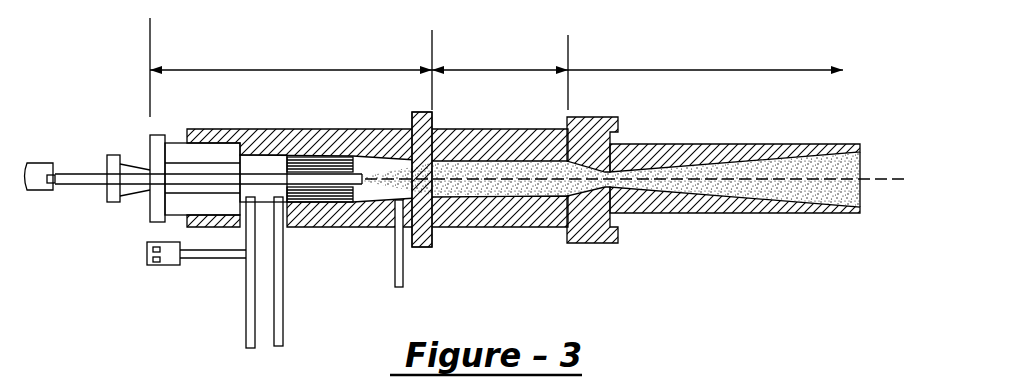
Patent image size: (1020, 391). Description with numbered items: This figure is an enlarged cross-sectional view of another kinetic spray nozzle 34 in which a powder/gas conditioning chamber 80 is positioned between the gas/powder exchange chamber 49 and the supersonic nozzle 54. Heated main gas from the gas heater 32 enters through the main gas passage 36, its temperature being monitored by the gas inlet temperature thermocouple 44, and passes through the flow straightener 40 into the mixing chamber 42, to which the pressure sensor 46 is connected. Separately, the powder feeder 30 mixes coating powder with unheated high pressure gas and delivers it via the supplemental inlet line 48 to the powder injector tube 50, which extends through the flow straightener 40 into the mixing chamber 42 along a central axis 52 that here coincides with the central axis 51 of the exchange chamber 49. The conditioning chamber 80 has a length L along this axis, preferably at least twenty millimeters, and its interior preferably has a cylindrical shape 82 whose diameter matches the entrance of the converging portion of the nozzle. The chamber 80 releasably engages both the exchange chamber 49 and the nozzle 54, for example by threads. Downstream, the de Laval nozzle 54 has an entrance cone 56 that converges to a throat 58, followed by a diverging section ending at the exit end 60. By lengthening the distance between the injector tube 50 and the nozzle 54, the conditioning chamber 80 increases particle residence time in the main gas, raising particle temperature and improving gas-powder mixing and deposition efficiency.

The high pressure powder feeder 30 is at (318, 5).
The gas heater 32 is at (258, 160).
The kinetic spray nozzle 34 is at (638, 40).
The main gas passage 36 is at (258, 318).
The flow straightener 40 is at (314, 202).
The mixing chamber 42 is at (357, 158).
The gas inlet temperature thermocouple 44 is at (160, 265).
The pressure sensor 46 is at (403, 264).
The supplemental inlet line 48 is at (38, 163).
The gas/powder exchange chamber 49 is at (253, 70).
The powder injector tube 50 is at (78, 186).
The central axis of the gas/powder exchange chamber 51 is at (657, 161).
The central axis of the injector tube 52 is at (872, 177).
The supersonic nozzle 54 is at (831, 138).
The entrance cone 56 is at (600, 168).
The throat 58 is at (620, 187).
The exit end 60 is at (862, 201).
The powder/gas conditioning chamber 80 is at (501, 231).
The cylindrical shape 82 is at (513, 168).